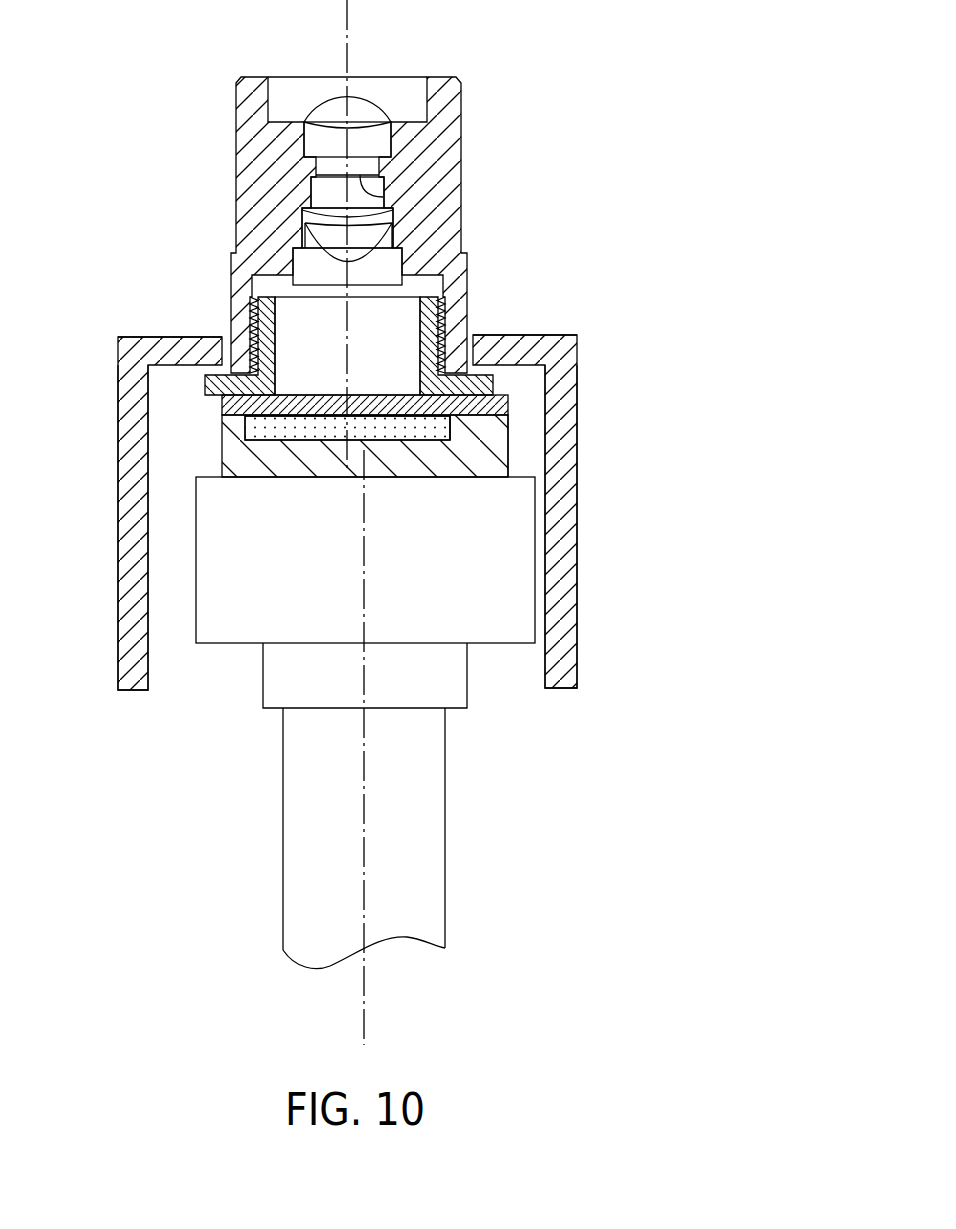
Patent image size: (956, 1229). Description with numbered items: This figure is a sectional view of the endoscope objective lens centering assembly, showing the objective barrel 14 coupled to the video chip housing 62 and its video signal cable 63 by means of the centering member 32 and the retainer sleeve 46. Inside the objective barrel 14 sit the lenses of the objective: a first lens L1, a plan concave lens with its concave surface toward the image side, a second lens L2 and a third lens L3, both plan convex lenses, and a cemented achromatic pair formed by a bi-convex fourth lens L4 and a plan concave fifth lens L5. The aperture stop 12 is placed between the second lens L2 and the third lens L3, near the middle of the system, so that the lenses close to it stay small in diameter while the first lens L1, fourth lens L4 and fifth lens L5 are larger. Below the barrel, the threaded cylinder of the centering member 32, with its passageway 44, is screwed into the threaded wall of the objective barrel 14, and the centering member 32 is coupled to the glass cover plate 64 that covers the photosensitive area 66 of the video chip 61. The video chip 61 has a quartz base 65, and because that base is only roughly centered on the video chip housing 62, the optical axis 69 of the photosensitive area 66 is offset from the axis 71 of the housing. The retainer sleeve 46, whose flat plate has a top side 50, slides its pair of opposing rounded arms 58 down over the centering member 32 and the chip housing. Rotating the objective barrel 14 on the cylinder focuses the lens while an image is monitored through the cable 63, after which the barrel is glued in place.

The aperture stop 12 is at (388, 195).
The objective barrel 14 is at (484, 137).
The centering member 32 is at (250, 317).
The passageway 44 is at (323, 359).
The retainer sleeve 46 is at (577, 345).
The top side 50 is at (515, 335).
The rounded arms 58 is at (125, 518).
The video chip 61 is at (207, 457).
The video chip housing 62 is at (183, 588).
The video signal cable 63 is at (297, 847).
The glass cover plate 64 is at (507, 400).
The base 65 is at (502, 447).
The photosensitive area 66 is at (265, 430).
The optical axis 69 is at (348, 32).
The axis 71 is at (363, 1010).
The first lens L1 is at (285, 75).
The second lens L2 is at (305, 143).
The third lens L3 is at (320, 197).
The fourth lens L4 is at (315, 233).
The fifth lens L5 is at (392, 262).